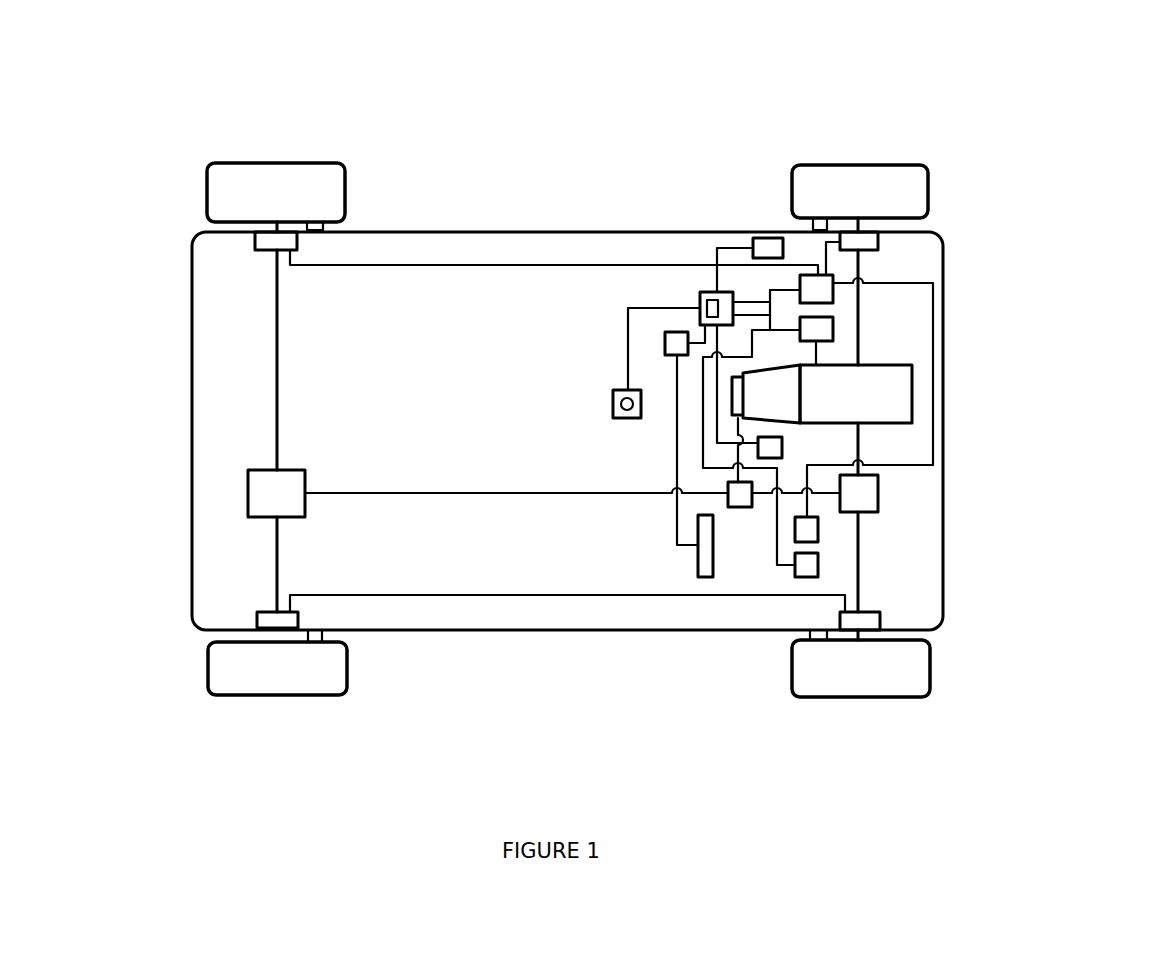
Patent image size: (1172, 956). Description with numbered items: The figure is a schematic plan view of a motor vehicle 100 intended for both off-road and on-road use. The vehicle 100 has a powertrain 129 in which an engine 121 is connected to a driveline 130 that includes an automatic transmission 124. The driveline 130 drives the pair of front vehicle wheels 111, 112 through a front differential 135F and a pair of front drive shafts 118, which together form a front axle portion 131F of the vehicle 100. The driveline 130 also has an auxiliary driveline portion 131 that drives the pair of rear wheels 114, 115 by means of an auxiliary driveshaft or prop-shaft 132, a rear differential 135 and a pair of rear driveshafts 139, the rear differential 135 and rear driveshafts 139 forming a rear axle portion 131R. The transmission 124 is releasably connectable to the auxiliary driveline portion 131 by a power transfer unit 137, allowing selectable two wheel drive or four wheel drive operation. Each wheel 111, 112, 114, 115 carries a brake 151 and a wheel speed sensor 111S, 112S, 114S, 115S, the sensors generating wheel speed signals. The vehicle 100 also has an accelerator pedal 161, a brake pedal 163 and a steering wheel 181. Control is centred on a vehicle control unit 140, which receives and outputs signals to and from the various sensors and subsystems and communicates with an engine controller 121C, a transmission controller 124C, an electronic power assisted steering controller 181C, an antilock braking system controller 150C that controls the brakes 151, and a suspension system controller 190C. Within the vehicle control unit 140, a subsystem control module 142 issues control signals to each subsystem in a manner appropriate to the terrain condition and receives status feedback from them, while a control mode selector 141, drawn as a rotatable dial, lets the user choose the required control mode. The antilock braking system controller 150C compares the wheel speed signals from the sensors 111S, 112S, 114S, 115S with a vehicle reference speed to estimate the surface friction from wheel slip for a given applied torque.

The motor vehicle 100 is at (1068, 128).
The front vehicle wheel 111 is at (913, 178).
The wheel speed sensor 111S is at (820, 220).
The front vehicle wheel 112 is at (910, 683).
The wheel speed sensor 112S is at (822, 637).
The rear wheel 114 is at (230, 177).
The wheel speed sensor 114S is at (317, 224).
The rear wheel 115 is at (228, 685).
The wheel speed sensor 115S is at (316, 642).
The front drive shaft 118 is at (860, 268).
The engine 121 is at (856, 382).
The engine controller 121C is at (830, 327).
The transmission 124 is at (766, 423).
The transmission controller 124C is at (775, 447).
The powertrain 129 is at (921, 392).
The driveline 130 is at (517, 517).
The auxiliary driveline portion 131 is at (350, 517).
The front axle portion 131F is at (868, 557).
The rear axle portion 131R is at (253, 293).
The auxiliary driveshaft 132 is at (433, 495).
The rear differential 135 is at (248, 493).
The front differential 135F is at (878, 490).
The power transfer unit 137 is at (741, 507).
The rear driveshaft 139 is at (276, 357).
The vehicle control unit 140 is at (700, 292).
The control mode selector 141 is at (620, 390).
The subsystem control module 142 is at (708, 296).
The antilock braking system controller 150C is at (830, 290).
The brake 151 is at (260, 237).
The accelerator pedal 161 is at (803, 577).
The brake pedal 163 is at (815, 530).
The steering wheel 181 is at (698, 565).
The electronic power assisted steering controller 181C is at (672, 332).
The suspension system controller 190C is at (766, 238).